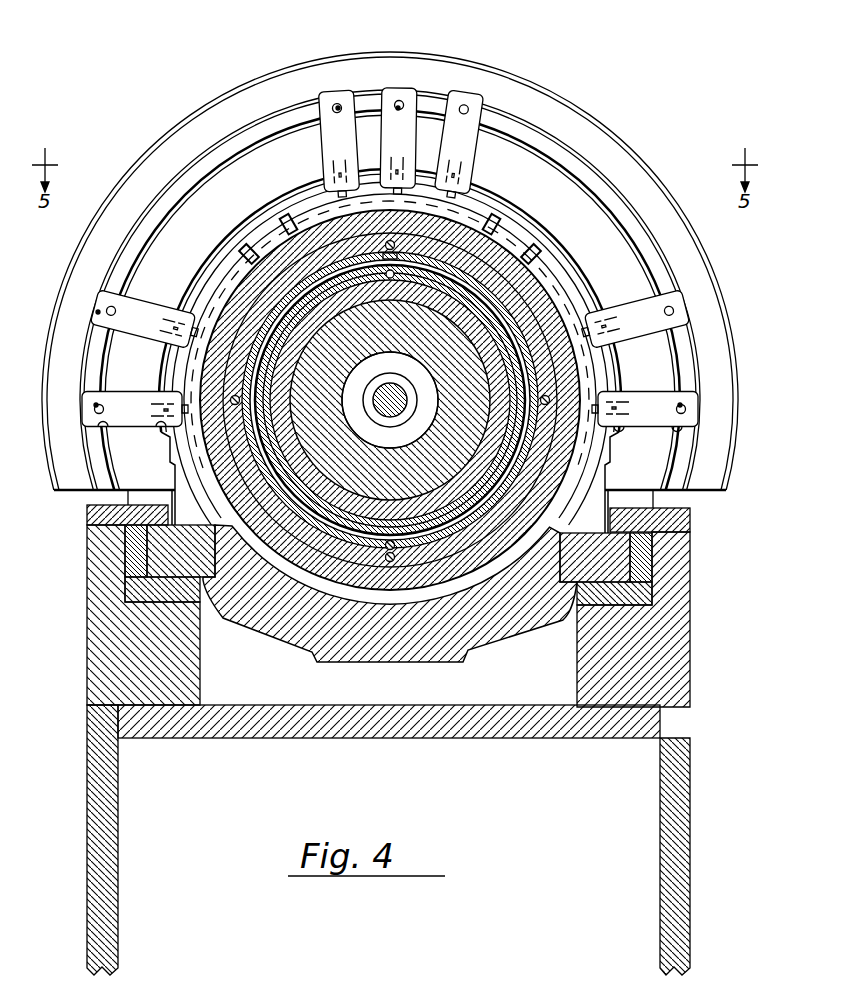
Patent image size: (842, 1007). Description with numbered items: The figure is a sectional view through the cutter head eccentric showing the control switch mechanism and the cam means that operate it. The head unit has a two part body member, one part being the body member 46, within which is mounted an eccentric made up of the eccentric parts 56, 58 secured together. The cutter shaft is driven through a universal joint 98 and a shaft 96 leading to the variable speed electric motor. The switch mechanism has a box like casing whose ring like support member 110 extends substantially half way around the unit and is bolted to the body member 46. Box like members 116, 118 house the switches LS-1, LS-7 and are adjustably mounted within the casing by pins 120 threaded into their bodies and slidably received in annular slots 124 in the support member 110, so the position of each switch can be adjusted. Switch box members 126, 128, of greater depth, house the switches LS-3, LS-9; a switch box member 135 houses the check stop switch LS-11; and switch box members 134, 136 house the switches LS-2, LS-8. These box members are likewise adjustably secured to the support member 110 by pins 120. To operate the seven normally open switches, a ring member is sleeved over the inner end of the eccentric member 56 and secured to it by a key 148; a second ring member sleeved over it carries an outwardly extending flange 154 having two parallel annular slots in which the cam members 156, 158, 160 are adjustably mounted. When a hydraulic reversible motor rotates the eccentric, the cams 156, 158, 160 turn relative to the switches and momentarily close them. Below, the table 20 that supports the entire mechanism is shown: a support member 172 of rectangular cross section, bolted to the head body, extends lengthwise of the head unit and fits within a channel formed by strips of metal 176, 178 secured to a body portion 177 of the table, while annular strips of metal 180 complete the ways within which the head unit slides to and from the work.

The ring like support member 110 is at (186, 106).
The box like member 116 is at (336, 106).
The box like member 118 is at (468, 108).
The switch box member 135 is at (399, 104).
The pins 120 is at (398, 108).
The annular slots 124 is at (556, 240).
The switch box member 126 is at (100, 305).
The switch box member 128 is at (640, 302).
The switch box member 134 is at (90, 413).
The switch box member 136 is at (698, 406).
The outwardly extending flange 154 is at (247, 253).
The cam member 156 is at (287, 220).
The cam member 160 is at (491, 220).
The key 148 is at (415, 262).
The cam member 158 is at (346, 240).
The shaft 96 is at (385, 402).
The universal joint 98 is at (392, 395).
The eccentric part 56 is at (232, 428).
The eccentric part 58 is at (243, 486).
The body member 46 is at (272, 624).
The table 20 is at (290, 738).
The support member 172 is at (167, 560).
The strip of metal 176 is at (135, 550).
The body portion 177 is at (97, 677).
The strip of metal 178 is at (143, 588).
The annular strips of metal 180 is at (97, 513).
The switch LS-1 is at (343, 163).
The switch LS-2 is at (145, 416).
The switch LS-3 is at (161, 303).
The switch LS-7 is at (460, 165).
The switch LS-8 is at (665, 428).
The switch LS-9 is at (634, 297).
The check stop switch LS-11 is at (395, 165).